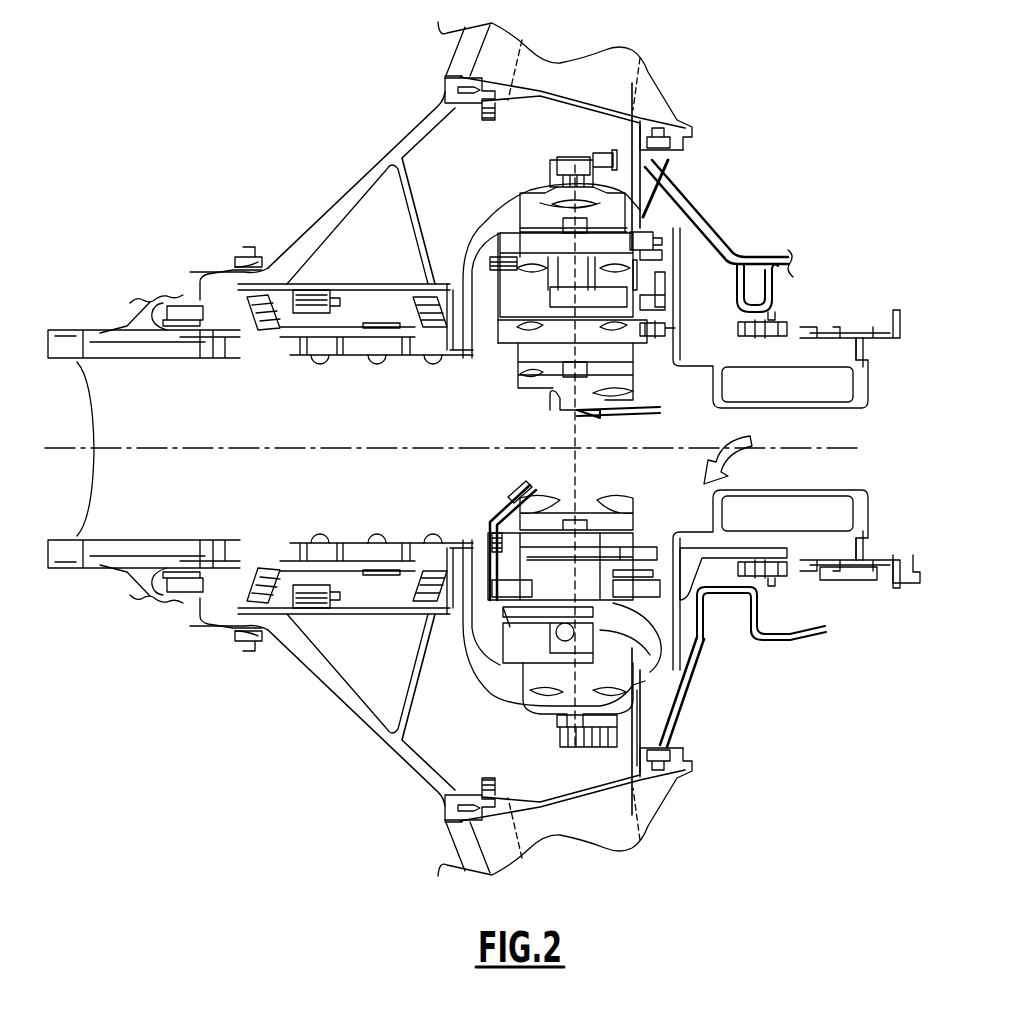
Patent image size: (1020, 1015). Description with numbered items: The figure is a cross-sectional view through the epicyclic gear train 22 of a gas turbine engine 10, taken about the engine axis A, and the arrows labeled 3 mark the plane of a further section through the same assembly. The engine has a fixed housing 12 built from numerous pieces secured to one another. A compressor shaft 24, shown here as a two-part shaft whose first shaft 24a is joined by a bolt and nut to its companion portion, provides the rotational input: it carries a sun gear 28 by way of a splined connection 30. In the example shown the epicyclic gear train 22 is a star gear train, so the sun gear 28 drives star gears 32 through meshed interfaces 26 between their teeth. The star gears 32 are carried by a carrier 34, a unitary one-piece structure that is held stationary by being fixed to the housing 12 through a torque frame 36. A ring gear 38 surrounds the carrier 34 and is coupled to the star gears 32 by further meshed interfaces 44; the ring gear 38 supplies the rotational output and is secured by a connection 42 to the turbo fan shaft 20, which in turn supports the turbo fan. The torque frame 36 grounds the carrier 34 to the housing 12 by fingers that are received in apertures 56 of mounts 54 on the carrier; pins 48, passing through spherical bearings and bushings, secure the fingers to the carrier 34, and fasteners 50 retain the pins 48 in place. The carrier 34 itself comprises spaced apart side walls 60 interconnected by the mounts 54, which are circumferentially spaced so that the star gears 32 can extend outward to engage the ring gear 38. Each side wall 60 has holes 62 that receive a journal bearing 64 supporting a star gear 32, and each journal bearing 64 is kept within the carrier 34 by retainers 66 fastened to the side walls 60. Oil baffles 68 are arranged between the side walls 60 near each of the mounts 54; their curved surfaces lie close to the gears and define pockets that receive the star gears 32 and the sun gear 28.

The section line 3- 3 is at (632, 83).
The gas turbine engine 10 is at (743, 106).
The fixed housing 12 is at (771, 290).
The turbo fan shaft 20 is at (463, 355).
The epicyclic gear train 22 is at (493, 697).
The compressor shaft 24 is at (755, 402).
The first shaft 24a is at (860, 373).
The meshed interfaces 26 is at (527, 383).
The sun gear 28 is at (552, 405).
The splined connection 30 is at (632, 420).
The star gears 32 is at (613, 355).
The carrier 34 is at (520, 645).
The torque frame 36 is at (688, 692).
The ring gear 38 is at (537, 205).
The connection 42 is at (553, 178).
The meshed interfaces 44 is at (512, 222).
The pins 48 is at (568, 665).
The fasteners 50 is at (518, 630).
The mounts 54 is at (663, 586).
The apertures 56 is at (537, 680).
The side walls 60 is at (502, 223).
The holes 62 is at (677, 222).
The journal bearing 64 is at (713, 242).
The retainers 66 is at (670, 333).
The oil baffles 68 is at (556, 486).
The axis A is at (762, 455).